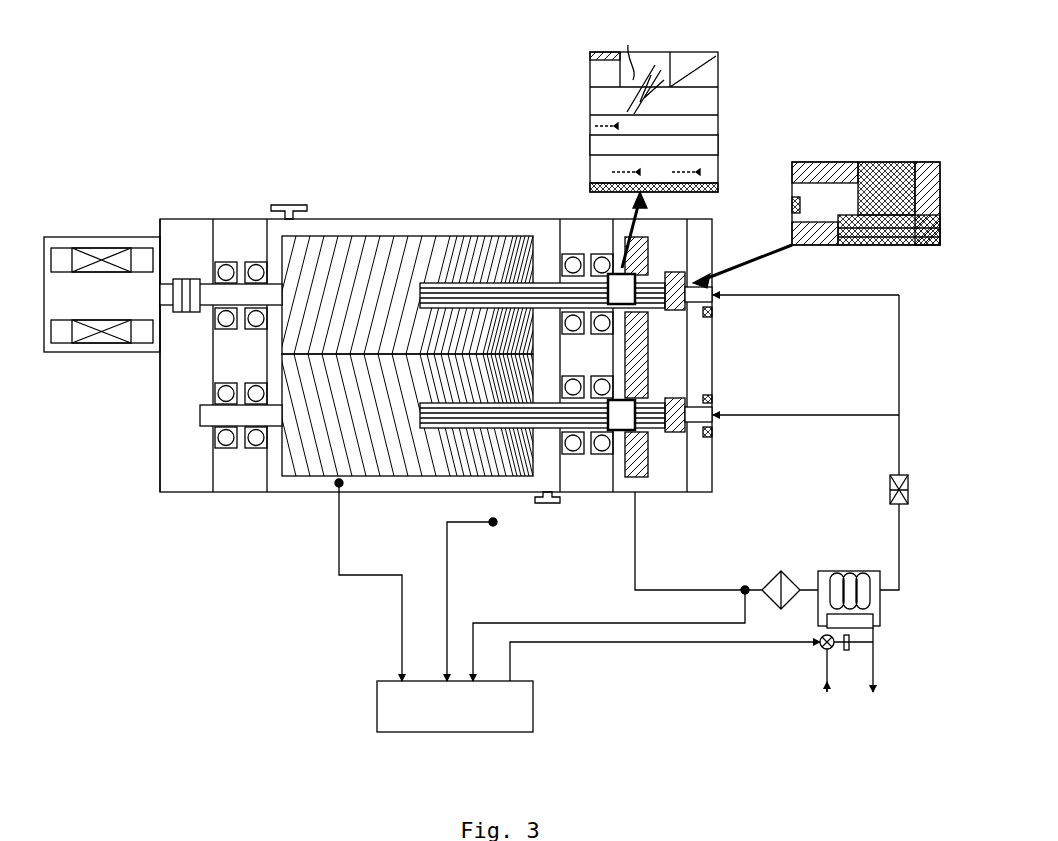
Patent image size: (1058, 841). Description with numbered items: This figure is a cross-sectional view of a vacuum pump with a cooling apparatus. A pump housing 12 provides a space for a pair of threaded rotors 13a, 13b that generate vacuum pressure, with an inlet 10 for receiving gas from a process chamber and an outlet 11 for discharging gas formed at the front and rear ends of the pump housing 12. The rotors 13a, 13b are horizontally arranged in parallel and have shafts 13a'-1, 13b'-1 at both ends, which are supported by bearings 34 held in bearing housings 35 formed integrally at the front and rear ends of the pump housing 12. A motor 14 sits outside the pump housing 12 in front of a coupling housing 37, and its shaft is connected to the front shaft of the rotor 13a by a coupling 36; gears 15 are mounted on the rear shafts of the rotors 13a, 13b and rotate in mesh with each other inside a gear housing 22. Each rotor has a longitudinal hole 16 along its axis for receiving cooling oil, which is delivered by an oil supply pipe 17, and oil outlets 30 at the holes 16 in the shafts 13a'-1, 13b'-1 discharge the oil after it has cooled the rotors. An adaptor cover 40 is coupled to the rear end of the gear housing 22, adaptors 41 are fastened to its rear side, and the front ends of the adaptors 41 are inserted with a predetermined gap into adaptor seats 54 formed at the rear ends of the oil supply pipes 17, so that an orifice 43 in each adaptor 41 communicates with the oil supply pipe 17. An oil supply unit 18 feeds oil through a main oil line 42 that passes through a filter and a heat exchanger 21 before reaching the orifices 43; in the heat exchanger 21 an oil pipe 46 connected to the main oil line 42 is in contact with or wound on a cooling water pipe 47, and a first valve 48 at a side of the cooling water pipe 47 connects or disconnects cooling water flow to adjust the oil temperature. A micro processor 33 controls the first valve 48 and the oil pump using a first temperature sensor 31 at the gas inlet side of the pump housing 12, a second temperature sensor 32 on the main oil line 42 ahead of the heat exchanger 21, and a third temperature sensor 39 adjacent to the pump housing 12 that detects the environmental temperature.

The inlet 10 is at (292, 212).
The outlet 11 is at (546, 503).
The pump housing 12 is at (372, 219).
The rotor 13a is at (413, 254).
The rotor 13b is at (403, 445).
The shaft 13a'-1 is at (581, 288).
The shaft 13b'-1 is at (592, 504).
The motor 14 is at (63, 237).
The gears 15 is at (690, 62).
The hole 16 is at (435, 283).
The oil supply pipe 17 is at (455, 283).
The oil supply unit 18 is at (795, 510).
The heat exchanger 21 is at (830, 571).
The gear housing 22 is at (672, 500).
The oil outlet 30 is at (622, 53).
The first temperature sensor 31 is at (335, 488).
The second temperature sensor 32 is at (745, 588).
The micro processor 33 is at (377, 710).
The bearings 34 is at (243, 262).
The bearing housings 35 is at (222, 218).
The coupling 36 is at (183, 280).
The coupling housing 37 is at (180, 218).
The third temperature sensor 39 is at (493, 527).
The adaptor cover 40 is at (712, 347).
The adaptor 41 is at (712, 310).
The main oil line 42 is at (900, 570).
The orifice 43 is at (883, 245).
The oil pipe 46 is at (845, 572).
The cooling water pipe 47 is at (873, 622).
The first valve 48 is at (822, 648).
The adaptor seat 54 is at (688, 445).